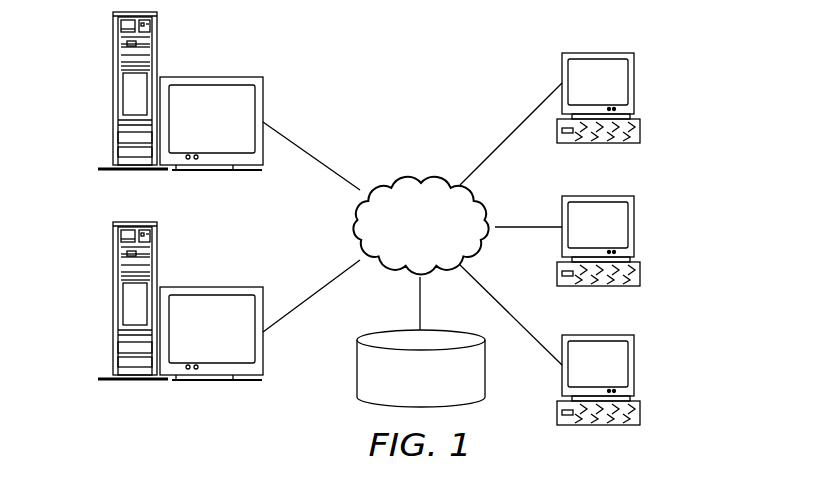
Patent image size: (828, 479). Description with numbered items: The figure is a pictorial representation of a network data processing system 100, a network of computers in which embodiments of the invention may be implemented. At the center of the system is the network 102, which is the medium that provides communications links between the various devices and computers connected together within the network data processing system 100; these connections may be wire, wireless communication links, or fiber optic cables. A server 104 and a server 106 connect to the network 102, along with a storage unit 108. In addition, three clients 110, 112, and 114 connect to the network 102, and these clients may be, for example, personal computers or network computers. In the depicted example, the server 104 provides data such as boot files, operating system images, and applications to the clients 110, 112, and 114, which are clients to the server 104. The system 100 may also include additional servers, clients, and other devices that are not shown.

The network data processing system 100 is at (473, 59).
The network 102 is at (393, 179).
The server 104 is at (113, 91).
The server 106 is at (113, 303).
The storage unit 108 is at (357, 382).
The client 110 is at (634, 83).
The client 112 is at (634, 225).
The client 114 is at (634, 365).